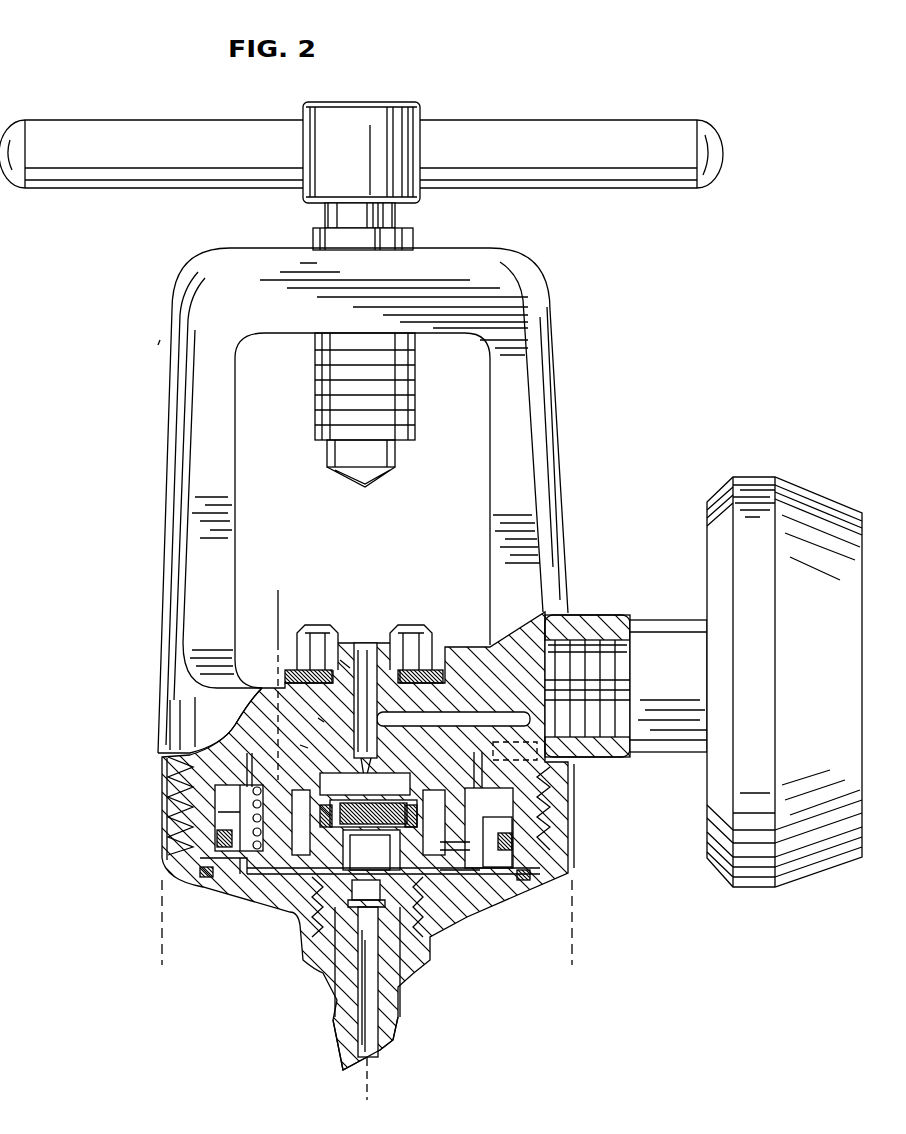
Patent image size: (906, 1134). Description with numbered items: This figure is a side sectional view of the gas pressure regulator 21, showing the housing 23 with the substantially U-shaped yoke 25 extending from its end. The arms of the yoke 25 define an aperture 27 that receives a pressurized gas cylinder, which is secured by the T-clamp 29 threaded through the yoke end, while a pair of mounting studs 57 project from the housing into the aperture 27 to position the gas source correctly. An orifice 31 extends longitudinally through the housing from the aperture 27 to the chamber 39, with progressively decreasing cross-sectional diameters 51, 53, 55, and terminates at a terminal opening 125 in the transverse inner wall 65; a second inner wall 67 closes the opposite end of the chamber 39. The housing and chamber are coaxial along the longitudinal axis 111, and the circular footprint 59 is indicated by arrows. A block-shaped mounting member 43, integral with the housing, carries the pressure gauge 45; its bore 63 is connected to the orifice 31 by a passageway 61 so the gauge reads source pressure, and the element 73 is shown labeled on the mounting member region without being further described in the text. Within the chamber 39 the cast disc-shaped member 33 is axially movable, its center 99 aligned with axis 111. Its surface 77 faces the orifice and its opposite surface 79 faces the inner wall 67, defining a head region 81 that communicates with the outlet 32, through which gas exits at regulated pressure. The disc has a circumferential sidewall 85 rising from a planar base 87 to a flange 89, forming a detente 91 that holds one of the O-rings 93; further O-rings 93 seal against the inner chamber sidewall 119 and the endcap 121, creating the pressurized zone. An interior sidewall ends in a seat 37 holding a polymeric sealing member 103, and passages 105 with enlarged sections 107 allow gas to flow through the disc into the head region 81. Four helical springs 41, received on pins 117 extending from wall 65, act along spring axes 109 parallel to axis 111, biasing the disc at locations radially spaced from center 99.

The gas pressure regulator 21 is at (148, 340).
The housing 23 is at (150, 758).
The yoke 25 is at (548, 275).
The aperture 27 is at (268, 518).
The T-clamp 29 is at (668, 190).
The orifice 31 is at (365, 655).
The outlet 32 is at (382, 1053).
The disc-shaped member 33 is at (228, 878).
The seat 37 is at (478, 905).
The chamber 39 is at (245, 880).
The springs 41 is at (262, 872).
The mounting member 43 is at (603, 610).
The pressure gauge 45 is at (753, 475).
The cross-sectional diameter 51 is at (347, 663).
The cross-sectional diameter 53 is at (320, 718).
The cross-sectional diameter 55 is at (305, 745).
The mounting studs 57 is at (315, 628).
The footprint 59 is at (160, 912).
The passageway 61 is at (513, 630).
The bore 63 is at (636, 642).
The inner wall 65 is at (560, 770).
The inner wall 67 is at (505, 880).
The threads 73 is at (622, 618).
The surface 77 is at (440, 900).
The surface 79 is at (468, 900).
The head region 81 is at (300, 880).
The circumferential sidewall 85 is at (175, 840).
The base 87 is at (520, 870).
The flange 89 is at (215, 820).
The detente 91 is at (560, 840).
The O-rings 93 is at (225, 787).
The center 99 is at (402, 935).
The sealing member 103 is at (245, 772).
The passages 105 is at (415, 905).
The sections 107 is at (340, 985).
The spring axes 109 is at (272, 600).
The longitudinal axis 111 is at (372, 1078).
The pins 117 is at (540, 790).
The inner chamber sidewall 119 is at (195, 800).
The endcap 121 is at (165, 920).
The terminal opening 125 is at (468, 662).